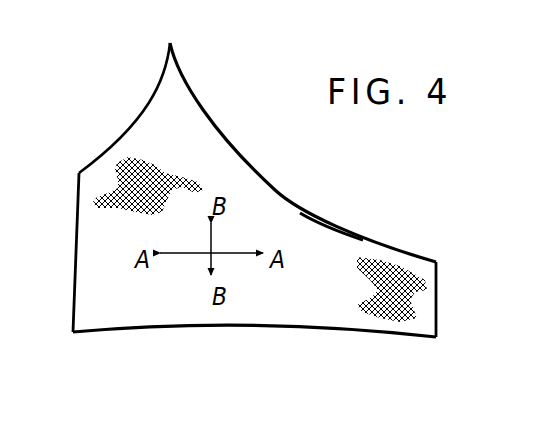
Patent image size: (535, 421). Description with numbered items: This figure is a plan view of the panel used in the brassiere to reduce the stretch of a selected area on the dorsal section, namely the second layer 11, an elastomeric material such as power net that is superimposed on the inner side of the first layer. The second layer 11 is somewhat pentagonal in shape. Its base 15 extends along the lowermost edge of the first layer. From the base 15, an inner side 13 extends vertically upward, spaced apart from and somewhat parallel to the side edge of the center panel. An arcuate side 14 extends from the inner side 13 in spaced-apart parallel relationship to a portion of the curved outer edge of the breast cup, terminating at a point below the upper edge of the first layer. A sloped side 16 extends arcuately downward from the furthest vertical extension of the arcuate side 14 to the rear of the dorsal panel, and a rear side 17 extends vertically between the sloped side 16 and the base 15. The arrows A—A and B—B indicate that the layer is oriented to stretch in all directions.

The second layer 11 is at (288, 180).
The inner side 13 is at (73, 301).
The arcuate side 14 is at (148, 115).
The base 15 is at (245, 328).
The sloped side 16 is at (371, 209).
The rear side 17 is at (437, 300).